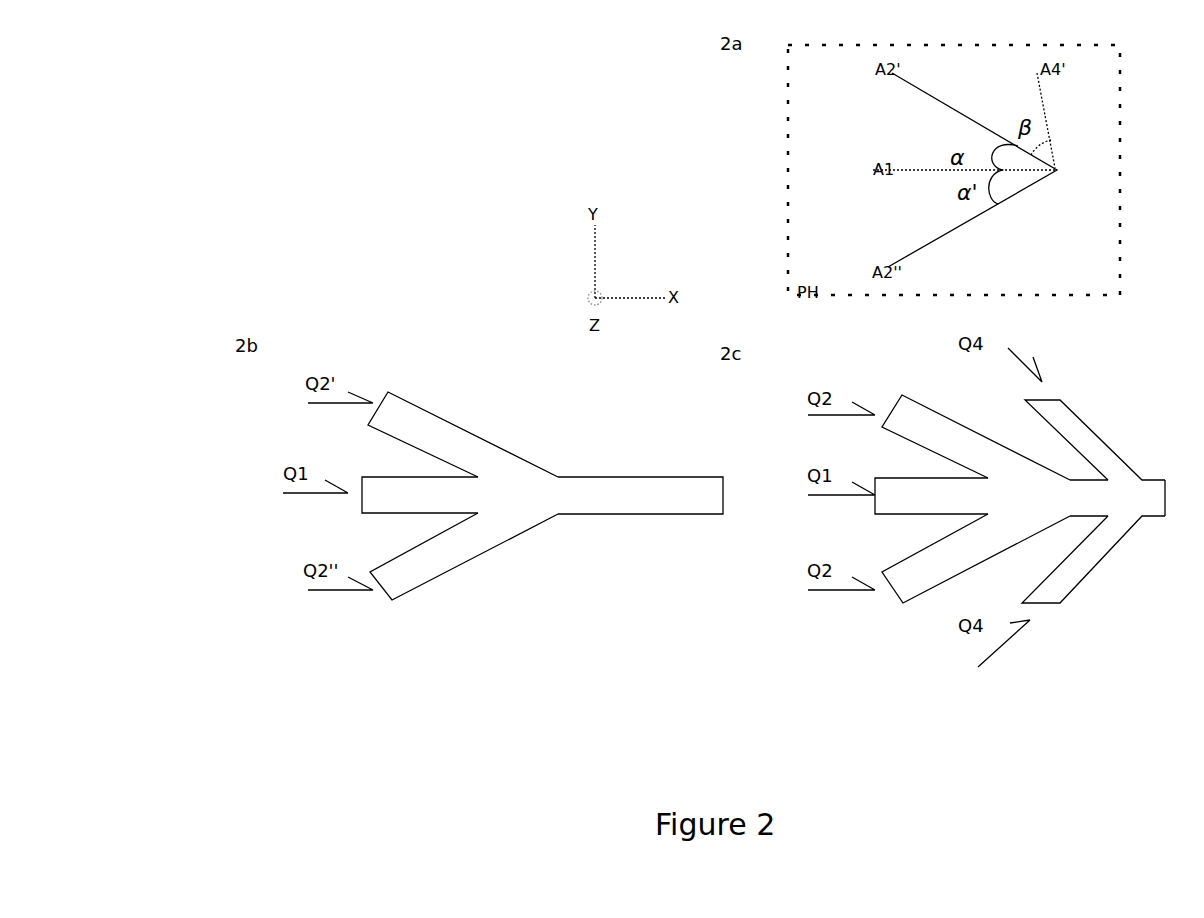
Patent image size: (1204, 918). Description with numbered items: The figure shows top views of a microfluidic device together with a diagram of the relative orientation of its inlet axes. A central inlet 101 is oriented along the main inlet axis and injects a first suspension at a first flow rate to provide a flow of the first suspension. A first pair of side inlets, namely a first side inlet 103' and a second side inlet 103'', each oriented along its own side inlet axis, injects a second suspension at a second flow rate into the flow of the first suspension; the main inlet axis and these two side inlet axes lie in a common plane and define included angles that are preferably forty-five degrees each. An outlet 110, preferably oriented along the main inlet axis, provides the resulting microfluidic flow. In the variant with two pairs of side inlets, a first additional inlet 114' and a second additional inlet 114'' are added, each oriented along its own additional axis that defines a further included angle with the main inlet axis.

The central inlet 101 is at (400, 490).
The first side inlet 103' is at (719, 422).
The second side inlet 103'' is at (720, 578).
The outlet 110 is at (633, 498).
The first additional inlet 114' is at (1095, 432).
The second additional inlet 114'' is at (1093, 579).